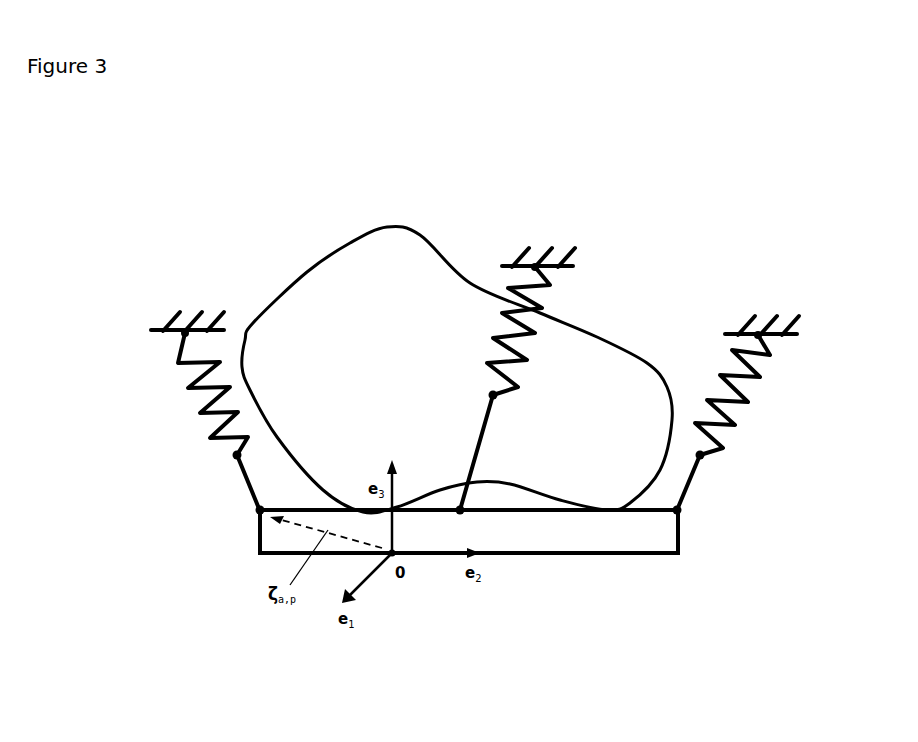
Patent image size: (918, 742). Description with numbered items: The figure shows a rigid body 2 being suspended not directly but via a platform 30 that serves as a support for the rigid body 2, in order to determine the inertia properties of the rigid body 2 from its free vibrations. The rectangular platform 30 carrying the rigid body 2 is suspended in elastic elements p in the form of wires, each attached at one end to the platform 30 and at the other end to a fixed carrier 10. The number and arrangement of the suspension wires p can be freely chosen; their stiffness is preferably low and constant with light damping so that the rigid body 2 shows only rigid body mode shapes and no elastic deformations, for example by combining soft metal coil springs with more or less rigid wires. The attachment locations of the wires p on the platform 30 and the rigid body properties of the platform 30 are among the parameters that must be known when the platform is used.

The rigid body 2 is at (342, 307).
The carrier 10 is at (185, 315).
The platform 30 is at (630, 540).
The elastic elements p is at (210, 437).